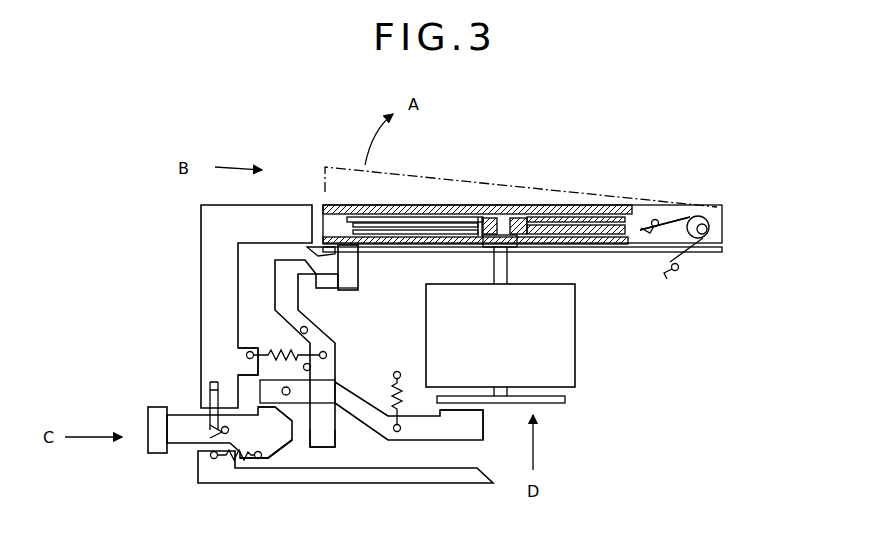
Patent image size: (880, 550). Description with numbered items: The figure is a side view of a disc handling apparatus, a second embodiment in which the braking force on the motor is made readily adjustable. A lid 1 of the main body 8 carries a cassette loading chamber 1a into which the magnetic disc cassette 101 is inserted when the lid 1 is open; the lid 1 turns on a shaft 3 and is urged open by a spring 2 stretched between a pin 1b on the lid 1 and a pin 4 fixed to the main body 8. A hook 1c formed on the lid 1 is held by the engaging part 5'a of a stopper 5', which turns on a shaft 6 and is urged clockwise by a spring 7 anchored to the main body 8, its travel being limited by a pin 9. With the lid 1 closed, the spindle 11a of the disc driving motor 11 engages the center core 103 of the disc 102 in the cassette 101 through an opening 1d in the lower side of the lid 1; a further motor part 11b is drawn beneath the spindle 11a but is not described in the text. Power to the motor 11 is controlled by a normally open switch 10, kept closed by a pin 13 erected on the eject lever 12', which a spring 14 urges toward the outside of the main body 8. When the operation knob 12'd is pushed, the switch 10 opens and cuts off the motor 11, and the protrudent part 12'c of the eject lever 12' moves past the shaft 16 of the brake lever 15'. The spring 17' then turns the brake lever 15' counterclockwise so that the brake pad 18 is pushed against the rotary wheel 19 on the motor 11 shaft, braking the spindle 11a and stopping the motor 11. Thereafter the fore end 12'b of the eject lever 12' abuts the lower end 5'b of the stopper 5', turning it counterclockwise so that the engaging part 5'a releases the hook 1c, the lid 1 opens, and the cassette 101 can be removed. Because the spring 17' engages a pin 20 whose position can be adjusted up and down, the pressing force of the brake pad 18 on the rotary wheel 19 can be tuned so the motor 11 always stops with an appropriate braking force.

The lid 1 is at (522, 225).
The cassette loading chamber 1a is at (318, 245).
The pin 1b is at (654, 219).
The hook 1c is at (358, 263).
The opening 1d is at (487, 246).
The spring 2 is at (683, 219).
The shaft 3 is at (705, 220).
The pin 4 is at (677, 271).
The stopper 5' is at (322, 353).
The engaging part 5'a is at (244, 274).
The lower end 5'b is at (331, 477).
The shaft 6 is at (308, 330).
The spring 7 is at (272, 350).
The main body 8 is at (212, 231).
The pin 9 is at (311, 368).
The switch 10 is at (212, 387).
The disc driving motor 11 is at (568, 316).
The spindle 11a is at (503, 217).
The plunger 11b is at (518, 247).
The eject lever 12' is at (197, 416).
The fore end 12'b is at (278, 482).
The protrudent part 12'c is at (266, 466).
The operation knob 12'd is at (135, 452).
The pin 13 is at (222, 437).
The spring 14 is at (216, 462).
The brake lever 15' is at (409, 453).
The shaft 16 is at (250, 372).
The spring 17' is at (434, 475).
The brake pad 18 is at (484, 414).
The rotary wheel 19 is at (550, 404).
The pin 20 is at (397, 371).
The magnetic disc cassette 101 is at (345, 217).
The disc 102 is at (570, 206).
The center core 103 is at (480, 216).